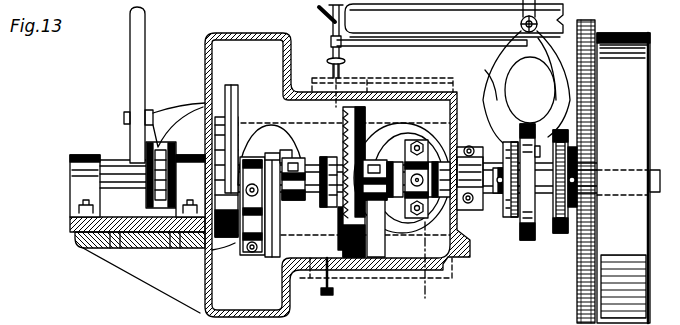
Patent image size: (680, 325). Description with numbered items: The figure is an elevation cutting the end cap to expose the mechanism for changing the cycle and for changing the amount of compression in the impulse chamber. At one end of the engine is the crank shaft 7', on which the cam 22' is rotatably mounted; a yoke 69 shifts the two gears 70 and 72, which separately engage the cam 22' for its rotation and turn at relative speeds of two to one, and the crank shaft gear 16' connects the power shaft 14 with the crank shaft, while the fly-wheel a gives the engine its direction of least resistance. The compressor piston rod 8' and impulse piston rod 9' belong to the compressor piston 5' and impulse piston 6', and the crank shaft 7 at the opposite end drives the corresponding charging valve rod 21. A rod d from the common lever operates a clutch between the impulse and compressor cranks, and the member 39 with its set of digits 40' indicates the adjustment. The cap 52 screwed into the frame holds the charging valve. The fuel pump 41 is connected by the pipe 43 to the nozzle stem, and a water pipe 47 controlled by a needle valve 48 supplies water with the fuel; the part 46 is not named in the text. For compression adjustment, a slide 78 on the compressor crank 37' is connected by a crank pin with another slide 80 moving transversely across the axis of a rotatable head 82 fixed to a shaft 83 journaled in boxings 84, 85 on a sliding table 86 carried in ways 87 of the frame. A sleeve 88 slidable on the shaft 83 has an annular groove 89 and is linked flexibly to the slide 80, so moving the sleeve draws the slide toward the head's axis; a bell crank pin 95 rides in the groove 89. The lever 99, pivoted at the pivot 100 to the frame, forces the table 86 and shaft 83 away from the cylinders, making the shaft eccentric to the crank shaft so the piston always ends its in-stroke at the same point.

The cap 52 is at (283, 82).
The ways 87 is at (82, 252).
The sleeve 88 is at (115, 240).
The sliding table 86 is at (125, 250).
The rotatable head 82 is at (200, 257).
The shaft 83 is at (117, 170).
The boxing 85 is at (82, 175).
The annular groove 89 is at (147, 160).
The boxing 84 is at (190, 186).
The lever 99 is at (138, 68).
The pivot 100 is at (124, 118).
The pin 95 is at (152, 111).
The slide 80 is at (232, 118).
The compressor piston rod 8' is at (226, 274).
The compressor piston 5' is at (271, 190).
The slide 78 is at (282, 249).
The compressor crank 37' is at (301, 143).
The crank shaft 7 is at (301, 208).
The member 39 is at (331, 179).
The impulse piston 6' is at (402, 181).
The set of digits 40' is at (397, 162).
The impulse piston rod 9' is at (426, 272).
The rod d is at (335, 293).
The rod 46 is at (345, 66).
The water pipe 47 is at (318, 20).
The needle valve 48 is at (355, 17).
The pipe 43 is at (450, 45).
The charging valve rod 21 is at (483, 76).
The fuel pump 41 is at (530, 61).
The yoke 69 is at (540, 62).
The gear 70 is at (512, 218).
The cam 22' is at (511, 219).
The crank shaft 7' is at (550, 203).
The gear 72 is at (578, 233).
The crank shaft gear 16' is at (561, 172).
The power shaft 14 is at (640, 161).
The fly-wheel a is at (627, 38).